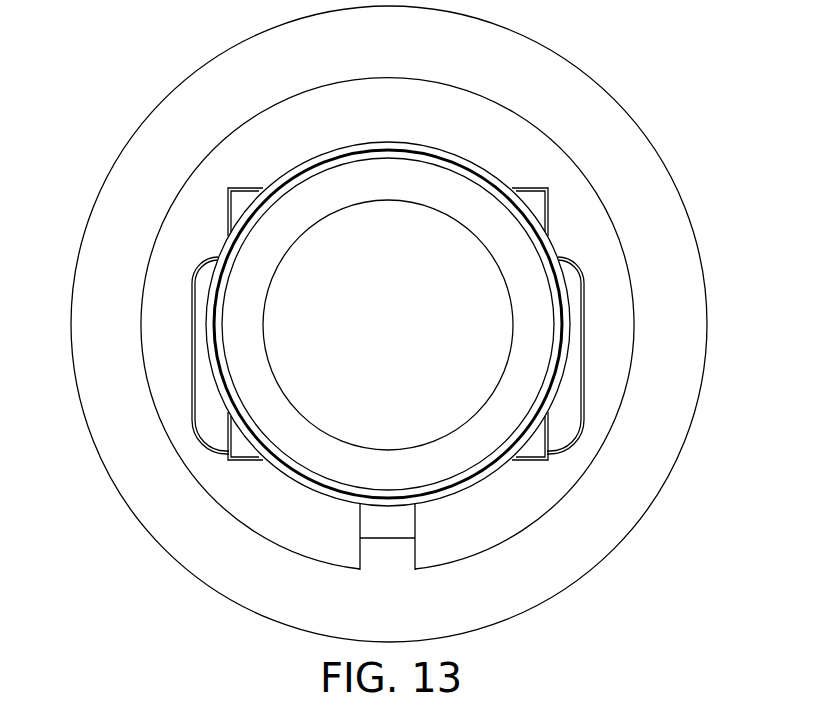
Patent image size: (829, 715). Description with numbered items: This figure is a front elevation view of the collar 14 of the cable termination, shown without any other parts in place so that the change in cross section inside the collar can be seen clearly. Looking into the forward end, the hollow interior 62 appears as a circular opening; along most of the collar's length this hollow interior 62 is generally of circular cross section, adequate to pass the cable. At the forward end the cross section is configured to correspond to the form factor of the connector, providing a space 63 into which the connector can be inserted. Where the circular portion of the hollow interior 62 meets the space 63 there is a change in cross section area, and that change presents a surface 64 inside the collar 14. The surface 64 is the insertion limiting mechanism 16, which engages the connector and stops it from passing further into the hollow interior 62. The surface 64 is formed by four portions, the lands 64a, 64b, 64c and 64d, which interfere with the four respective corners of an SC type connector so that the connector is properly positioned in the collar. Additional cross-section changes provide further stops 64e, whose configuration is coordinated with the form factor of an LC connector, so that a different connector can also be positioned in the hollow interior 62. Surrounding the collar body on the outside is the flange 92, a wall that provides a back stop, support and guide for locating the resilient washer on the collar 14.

The collar 14 is at (592, 190).
The insertion limiting mechanism 16 is at (538, 162).
The hollow interior 62 is at (457, 458).
The space 63 is at (273, 158).
The surface 64 is at (399, 329).
The land 64a is at (237, 200).
The land 64b is at (535, 205).
The land 64c is at (540, 433).
The land 64d is at (242, 443).
The stops 64e is at (202, 280).
The flange 92 is at (633, 495).